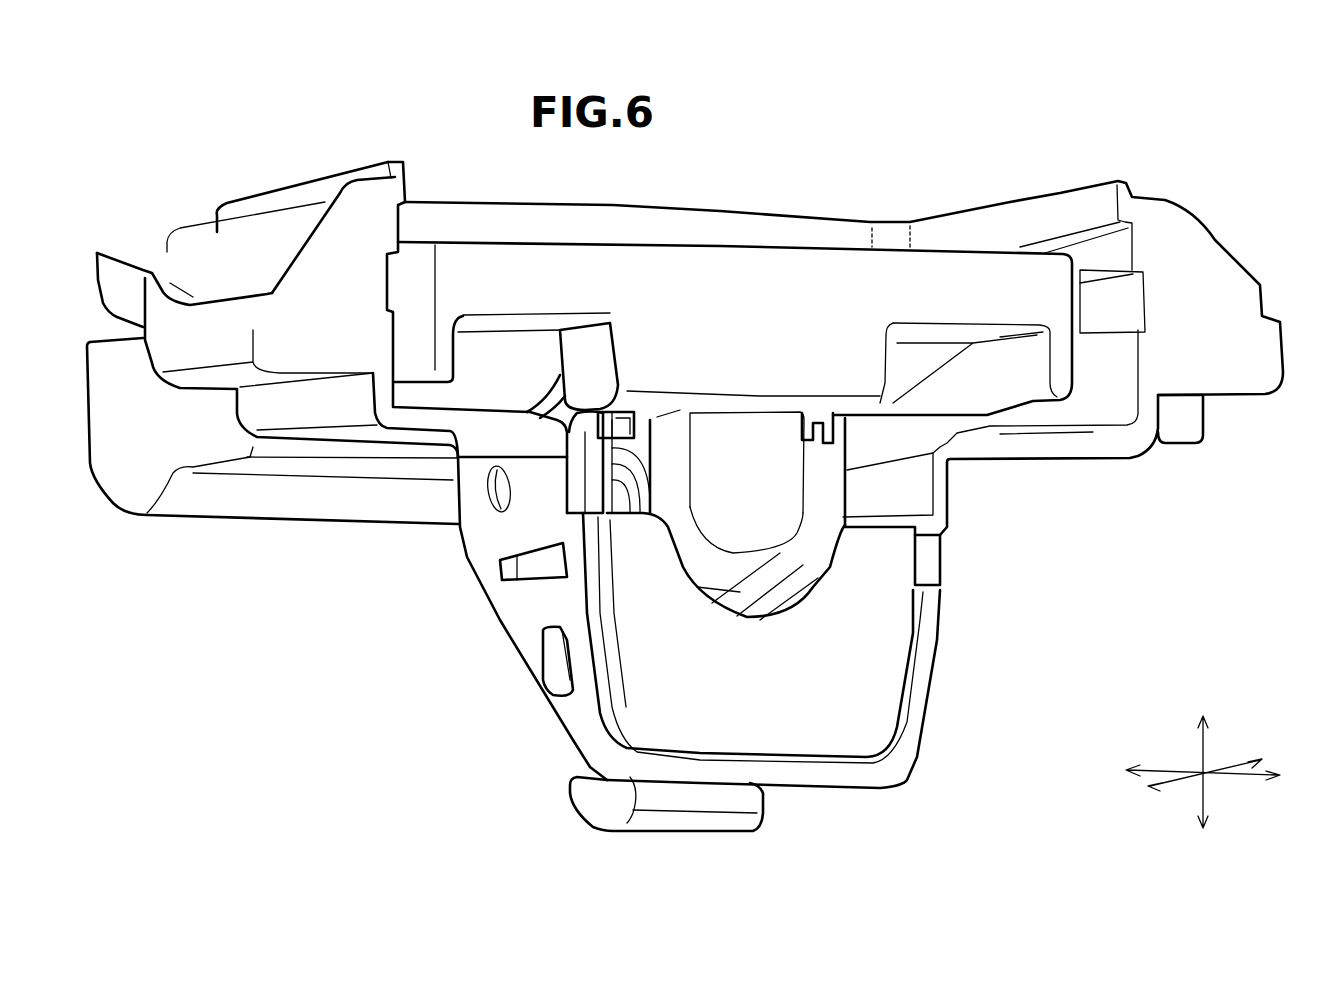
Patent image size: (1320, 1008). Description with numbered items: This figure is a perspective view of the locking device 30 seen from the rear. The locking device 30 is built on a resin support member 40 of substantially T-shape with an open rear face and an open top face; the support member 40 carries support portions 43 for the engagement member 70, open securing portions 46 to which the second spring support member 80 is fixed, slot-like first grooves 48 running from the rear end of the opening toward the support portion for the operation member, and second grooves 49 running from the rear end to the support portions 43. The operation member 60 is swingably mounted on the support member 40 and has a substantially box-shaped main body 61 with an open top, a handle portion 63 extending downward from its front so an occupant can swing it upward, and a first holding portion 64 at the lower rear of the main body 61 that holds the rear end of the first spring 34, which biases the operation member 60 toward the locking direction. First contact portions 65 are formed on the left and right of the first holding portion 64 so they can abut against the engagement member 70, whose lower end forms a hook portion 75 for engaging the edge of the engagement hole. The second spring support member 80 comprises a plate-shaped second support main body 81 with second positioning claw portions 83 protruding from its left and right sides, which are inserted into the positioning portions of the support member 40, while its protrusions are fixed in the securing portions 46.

The locking device 30 is at (1181, 96).
The support member 40 is at (1001, 195).
The first grooves 48 is at (1130, 306).
The main body of the operation member 61 is at (752, 280).
The operation member 60 is at (637, 331).
The first spring 34 is at (640, 480).
The first contact portions 65 is at (625, 415).
The first holding portion of the operation member 64 is at (738, 482).
The second grooves 49 is at (598, 488).
The handle portion 63 is at (323, 508).
The support portions for the engagement member 43 is at (483, 491).
The second positioning claw portions 83 is at (555, 557).
The securing portions for the second spring support member 46 is at (548, 661).
The hook portion 75 is at (590, 793).
The engagement member 70 is at (666, 804).
The second support main body 81 is at (833, 705).
The second spring support member 80 is at (761, 650).